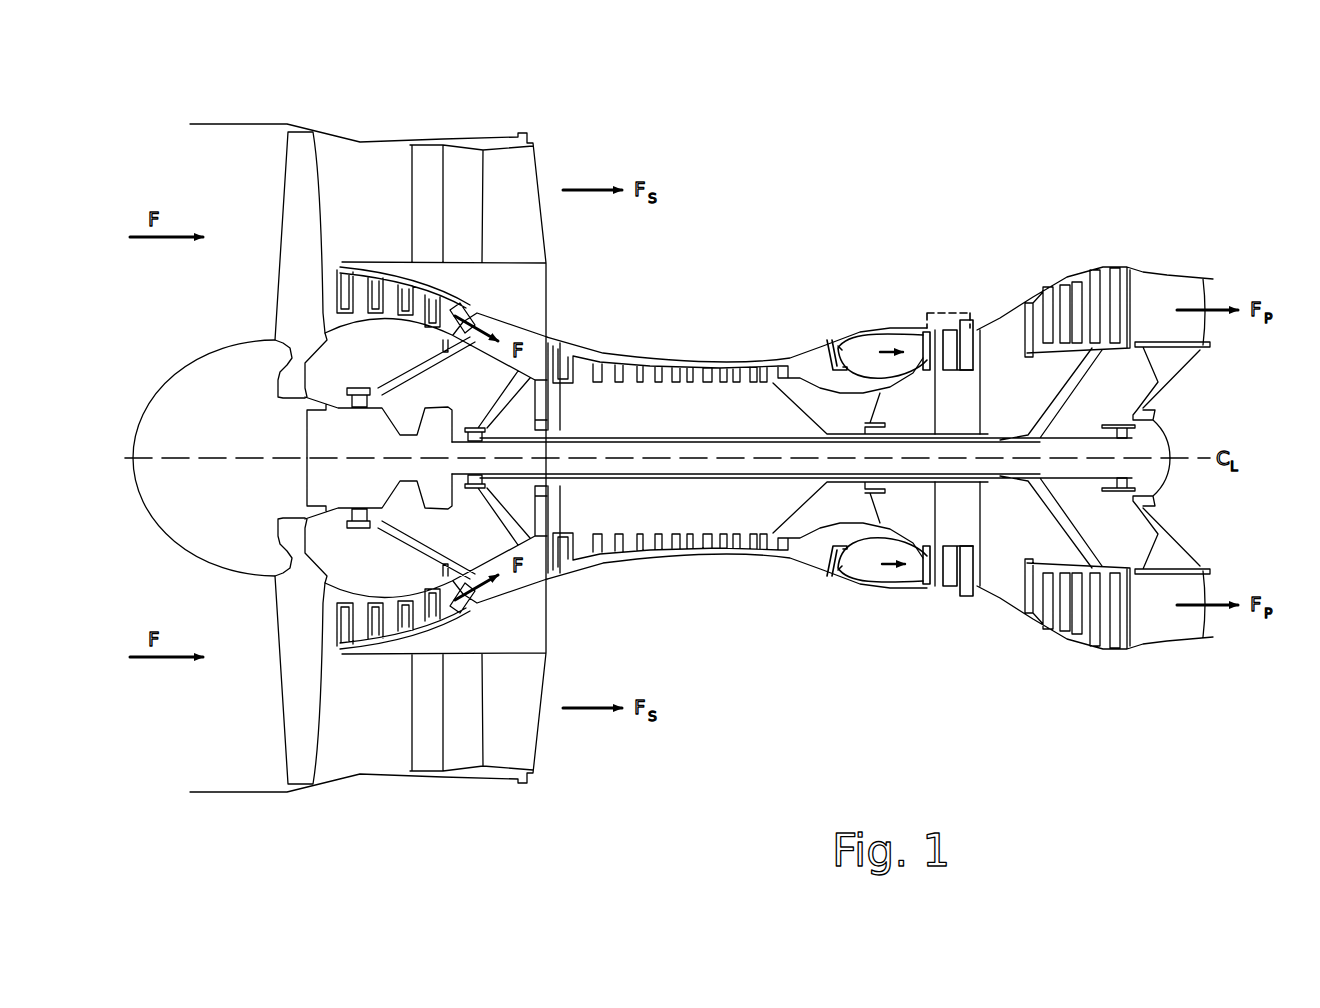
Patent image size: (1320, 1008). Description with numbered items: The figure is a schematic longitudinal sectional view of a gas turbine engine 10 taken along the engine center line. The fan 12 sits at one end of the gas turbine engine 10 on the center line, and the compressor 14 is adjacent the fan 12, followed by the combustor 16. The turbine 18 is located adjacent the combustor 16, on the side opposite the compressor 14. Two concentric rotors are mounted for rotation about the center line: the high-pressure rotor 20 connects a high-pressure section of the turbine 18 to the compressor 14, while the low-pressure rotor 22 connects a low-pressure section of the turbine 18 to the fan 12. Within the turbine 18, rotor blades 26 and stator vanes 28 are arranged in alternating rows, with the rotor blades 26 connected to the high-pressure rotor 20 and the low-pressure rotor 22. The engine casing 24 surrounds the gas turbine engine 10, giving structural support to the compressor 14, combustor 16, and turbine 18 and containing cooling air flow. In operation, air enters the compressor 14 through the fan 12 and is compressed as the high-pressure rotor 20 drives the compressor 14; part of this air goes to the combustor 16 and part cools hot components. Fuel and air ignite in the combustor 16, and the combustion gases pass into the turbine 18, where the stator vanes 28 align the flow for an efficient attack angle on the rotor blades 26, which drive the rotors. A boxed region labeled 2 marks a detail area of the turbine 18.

The gas turbine engine 10 is at (176, 108).
The fan 12 is at (300, 208).
The compressor 14 is at (795, 812).
The combustor 16 is at (880, 336).
The turbine 18 is at (1143, 720).
The high-pressure rotor 20 is at (783, 490).
The low-pressure rotor 22 is at (696, 466).
The engine casing 24 is at (845, 332).
The rotor blades 26 is at (922, 330).
The stator vanes 28 is at (956, 330).
The detail region shown in Fig. 2 is at (932, 312).